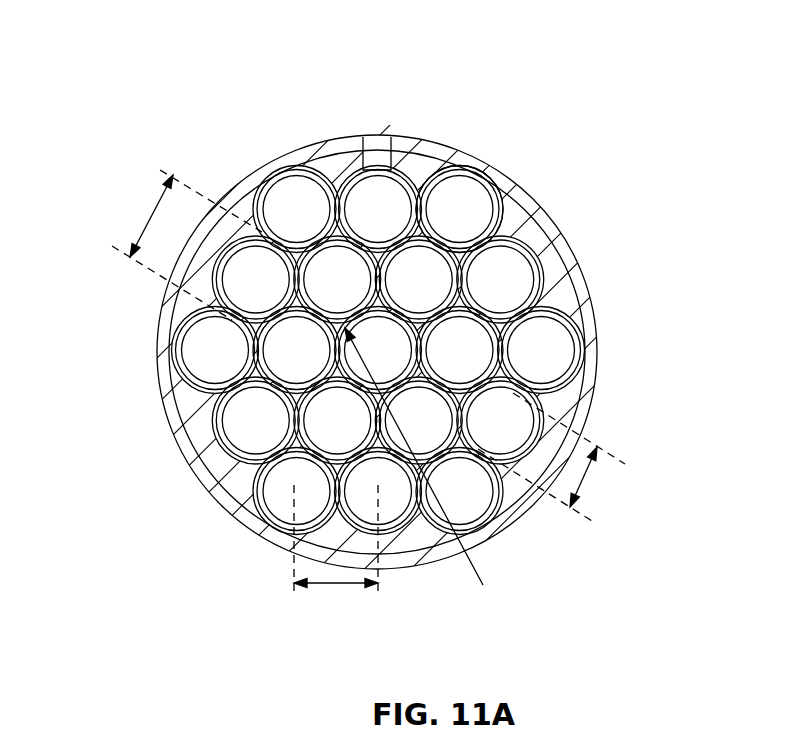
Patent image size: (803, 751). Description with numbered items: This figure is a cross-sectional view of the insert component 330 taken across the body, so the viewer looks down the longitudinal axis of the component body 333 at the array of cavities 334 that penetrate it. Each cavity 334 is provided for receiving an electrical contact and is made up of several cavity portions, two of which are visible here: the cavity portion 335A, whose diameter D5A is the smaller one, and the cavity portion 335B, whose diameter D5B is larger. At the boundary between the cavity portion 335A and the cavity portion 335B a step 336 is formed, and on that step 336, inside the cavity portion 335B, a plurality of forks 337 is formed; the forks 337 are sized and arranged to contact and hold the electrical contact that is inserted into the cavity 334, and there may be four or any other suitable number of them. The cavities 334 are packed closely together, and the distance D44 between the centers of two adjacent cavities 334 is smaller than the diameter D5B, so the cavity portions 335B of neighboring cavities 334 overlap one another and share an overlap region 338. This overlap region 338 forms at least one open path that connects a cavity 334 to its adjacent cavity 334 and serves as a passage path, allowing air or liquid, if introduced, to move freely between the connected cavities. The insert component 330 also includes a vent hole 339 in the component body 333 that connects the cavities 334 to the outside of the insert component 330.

The insert component 330 is at (378, 375).
The component body 333 is at (345, 375).
The cavity 334 is at (174, 392).
The cavity portion 335A is at (584, 276).
The cavity portion 335B is at (581, 286).
The step 336 is at (524, 190).
The fork 337 is at (498, 160).
The overlap region 338 is at (449, 467).
The vent hole 339 is at (408, 113).
The distance between centers of two adjacent cavities D44 is at (336, 564).
The diameter of cavity portion 335a D5A is at (564, 457).
The diameter of cavity portion 335b D5B is at (177, 245).